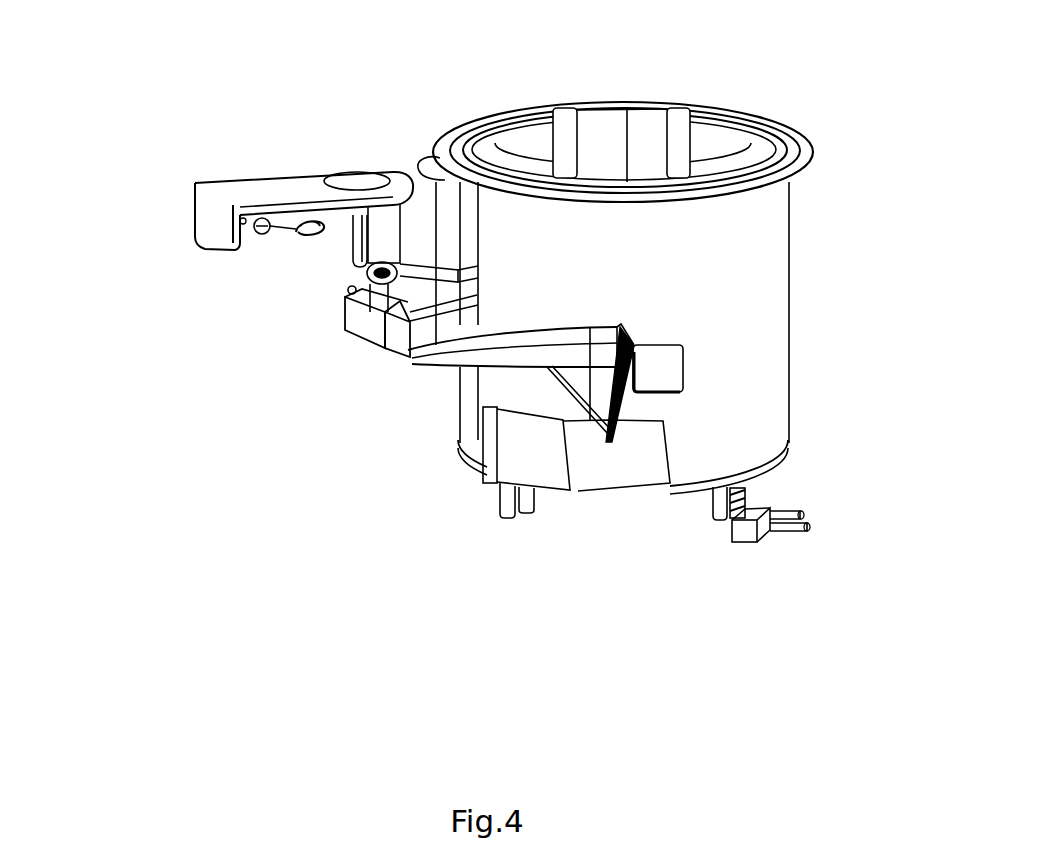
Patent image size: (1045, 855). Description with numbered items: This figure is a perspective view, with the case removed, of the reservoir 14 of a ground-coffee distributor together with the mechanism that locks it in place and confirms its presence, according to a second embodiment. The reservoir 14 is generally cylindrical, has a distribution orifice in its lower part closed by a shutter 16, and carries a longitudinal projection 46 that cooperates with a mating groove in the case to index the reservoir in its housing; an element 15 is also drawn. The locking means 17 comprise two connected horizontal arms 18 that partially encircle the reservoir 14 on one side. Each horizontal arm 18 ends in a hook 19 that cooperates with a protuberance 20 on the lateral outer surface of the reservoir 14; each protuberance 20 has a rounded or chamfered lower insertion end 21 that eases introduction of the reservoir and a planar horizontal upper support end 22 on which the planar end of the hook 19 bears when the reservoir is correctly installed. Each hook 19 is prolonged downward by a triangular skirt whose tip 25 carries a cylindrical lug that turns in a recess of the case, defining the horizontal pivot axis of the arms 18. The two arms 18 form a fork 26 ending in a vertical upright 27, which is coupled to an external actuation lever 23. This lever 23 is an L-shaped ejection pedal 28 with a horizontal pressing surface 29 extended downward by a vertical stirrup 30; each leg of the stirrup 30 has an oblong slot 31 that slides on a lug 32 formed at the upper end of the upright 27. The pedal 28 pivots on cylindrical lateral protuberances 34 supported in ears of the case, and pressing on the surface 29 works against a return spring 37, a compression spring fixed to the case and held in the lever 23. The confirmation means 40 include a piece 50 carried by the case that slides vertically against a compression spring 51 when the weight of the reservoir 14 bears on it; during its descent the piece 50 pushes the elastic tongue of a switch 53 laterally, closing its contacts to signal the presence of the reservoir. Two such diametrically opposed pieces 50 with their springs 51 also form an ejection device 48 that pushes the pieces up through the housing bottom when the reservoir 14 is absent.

The reservoir 14 is at (728, 267).
The insert panel 15 is at (647, 140).
The shutter 16 is at (538, 462).
The locking means 17 is at (313, 441).
The horizontal arm 18 is at (418, 256).
The hook 19 is at (620, 335).
The protuberance 20 is at (657, 365).
The lower insertion end 21 is at (667, 394).
The upper support end 22 is at (660, 344).
The external actuation lever 23 is at (188, 177).
The tip 25 is at (606, 442).
The fork 26 is at (368, 336).
The vertical upright 27 is at (350, 289).
The ejection pedal 28 is at (248, 178).
The horizontal pressing surface 29 is at (347, 168).
The vertical stirrup 30 is at (377, 241).
The oblong slot 31 is at (362, 280).
The lug 32 is at (366, 298).
The lateral protuberance 34 is at (243, 220).
The return spring 37 is at (300, 233).
The confirmation means 40 is at (797, 490).
The longitudinal projection 46 is at (455, 230).
The ejection device 48 is at (673, 544).
The piece 50 is at (499, 507).
The compression spring 51 is at (750, 497).
The switch 53 is at (802, 530).